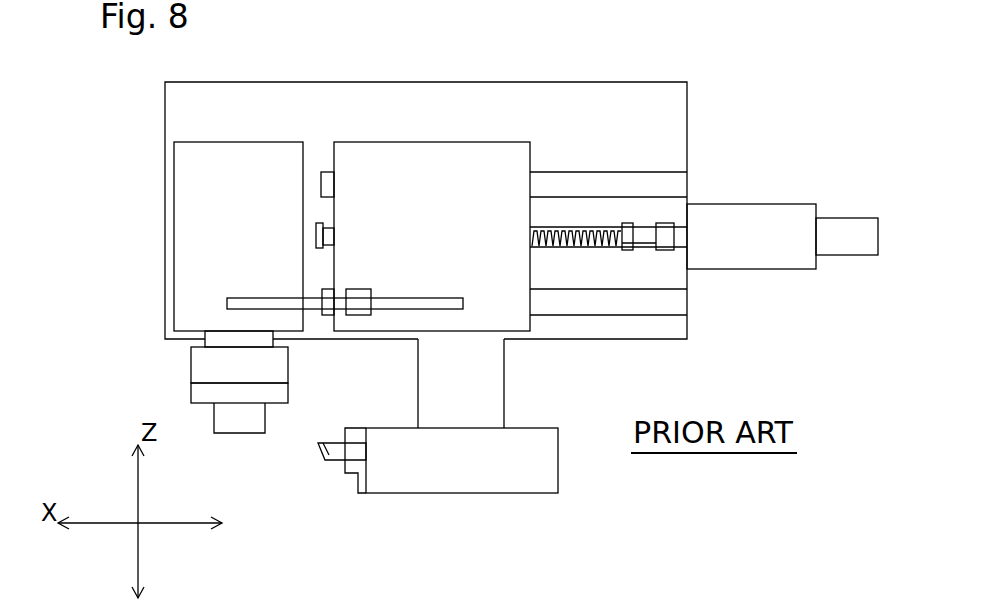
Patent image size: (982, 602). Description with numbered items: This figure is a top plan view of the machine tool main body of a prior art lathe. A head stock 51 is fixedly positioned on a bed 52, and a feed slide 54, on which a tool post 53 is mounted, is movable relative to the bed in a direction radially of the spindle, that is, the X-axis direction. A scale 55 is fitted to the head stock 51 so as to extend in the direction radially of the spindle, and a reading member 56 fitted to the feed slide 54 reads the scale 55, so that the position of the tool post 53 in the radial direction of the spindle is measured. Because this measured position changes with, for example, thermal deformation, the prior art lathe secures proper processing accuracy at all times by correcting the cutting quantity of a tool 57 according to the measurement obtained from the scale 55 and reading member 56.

The head stock 51 is at (187, 195).
The bed 52 is at (520, 93).
The tool post 53 is at (440, 475).
The feed slide 54 is at (416, 180).
The scale 55 is at (310, 309).
The reading member 56 is at (358, 305).
The tool 57 is at (323, 461).